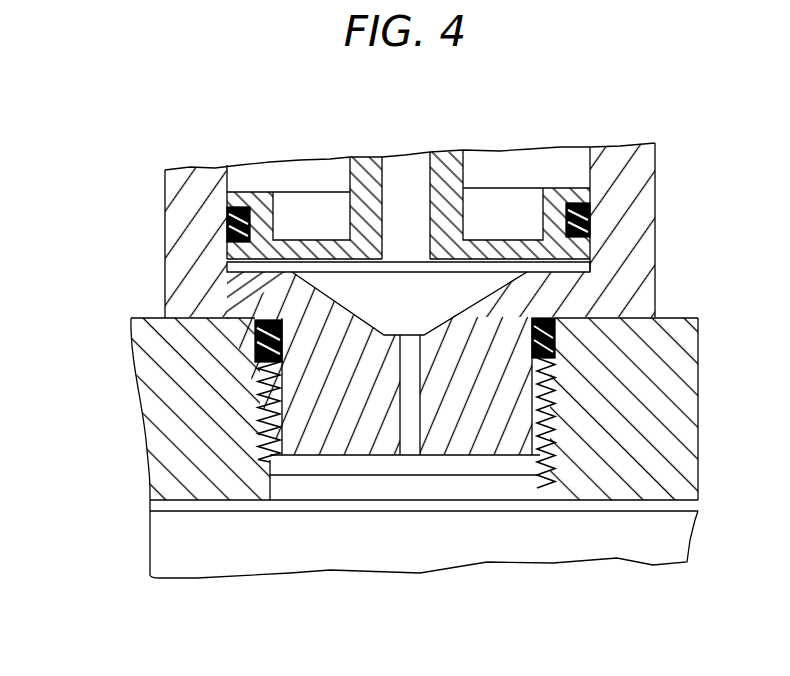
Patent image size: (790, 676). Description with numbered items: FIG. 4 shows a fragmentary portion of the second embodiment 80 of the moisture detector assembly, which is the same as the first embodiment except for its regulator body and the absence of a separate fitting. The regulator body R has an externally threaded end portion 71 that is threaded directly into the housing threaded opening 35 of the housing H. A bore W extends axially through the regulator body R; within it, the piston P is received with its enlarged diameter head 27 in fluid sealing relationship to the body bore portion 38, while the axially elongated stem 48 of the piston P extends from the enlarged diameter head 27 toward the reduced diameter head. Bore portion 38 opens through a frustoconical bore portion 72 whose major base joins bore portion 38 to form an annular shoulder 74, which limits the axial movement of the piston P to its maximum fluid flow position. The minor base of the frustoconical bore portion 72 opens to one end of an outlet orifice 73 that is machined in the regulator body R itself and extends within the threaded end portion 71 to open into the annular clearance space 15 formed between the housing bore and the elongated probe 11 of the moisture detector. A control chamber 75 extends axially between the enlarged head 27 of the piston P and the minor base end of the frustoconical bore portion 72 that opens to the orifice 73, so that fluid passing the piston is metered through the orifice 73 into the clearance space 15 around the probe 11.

The second embodiment 80 is at (164, 193).
The regulator body R is at (177, 232).
The annular shoulder 74 is at (565, 273).
The frustoconical bore portion 72 is at (290, 278).
The stem 48 is at (365, 157).
The piston P is at (446, 170).
The enlarged diameter head 27 is at (560, 188).
The bore W is at (590, 170).
The body bore portion 38 is at (592, 191).
The control chamber 75 is at (417, 293).
The externally threaded end portion 71 is at (327, 425).
The outlet orifice 73 is at (410, 433).
The housing threaded opening 35 is at (542, 450).
The housing H is at (152, 393).
The annular clearance space 15 is at (160, 507).
The probe 11 is at (203, 553).